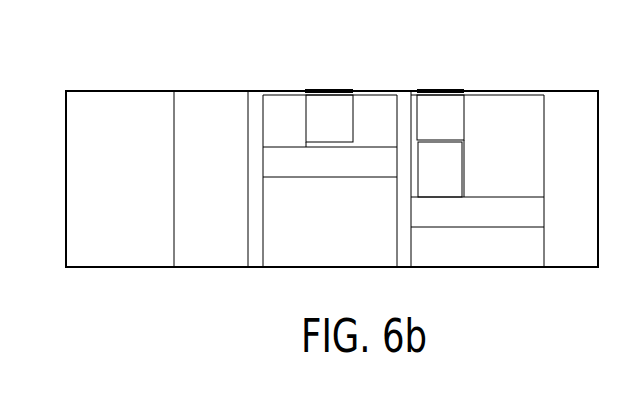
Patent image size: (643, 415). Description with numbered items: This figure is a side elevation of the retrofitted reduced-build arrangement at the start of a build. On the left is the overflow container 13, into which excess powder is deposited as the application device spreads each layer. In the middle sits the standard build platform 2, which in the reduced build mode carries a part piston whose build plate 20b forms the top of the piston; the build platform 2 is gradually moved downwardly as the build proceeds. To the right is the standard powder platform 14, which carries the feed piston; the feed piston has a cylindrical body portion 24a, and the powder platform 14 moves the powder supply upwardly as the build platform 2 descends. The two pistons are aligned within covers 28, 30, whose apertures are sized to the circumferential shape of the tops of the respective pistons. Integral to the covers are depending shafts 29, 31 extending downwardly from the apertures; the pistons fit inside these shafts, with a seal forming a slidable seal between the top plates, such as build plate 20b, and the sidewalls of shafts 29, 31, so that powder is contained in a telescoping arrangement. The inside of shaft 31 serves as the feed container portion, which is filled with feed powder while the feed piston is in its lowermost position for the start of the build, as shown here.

The build platform 2 is at (321, 165).
The overflow container 13 is at (202, 110).
The powder platform 14 is at (537, 212).
The build plate 20b is at (320, 90).
The cylindrical body portion 24a is at (455, 163).
The cover 28 is at (285, 90).
The shaft 29 is at (322, 114).
The cover 30 is at (515, 90).
The shaft 31 is at (457, 119).